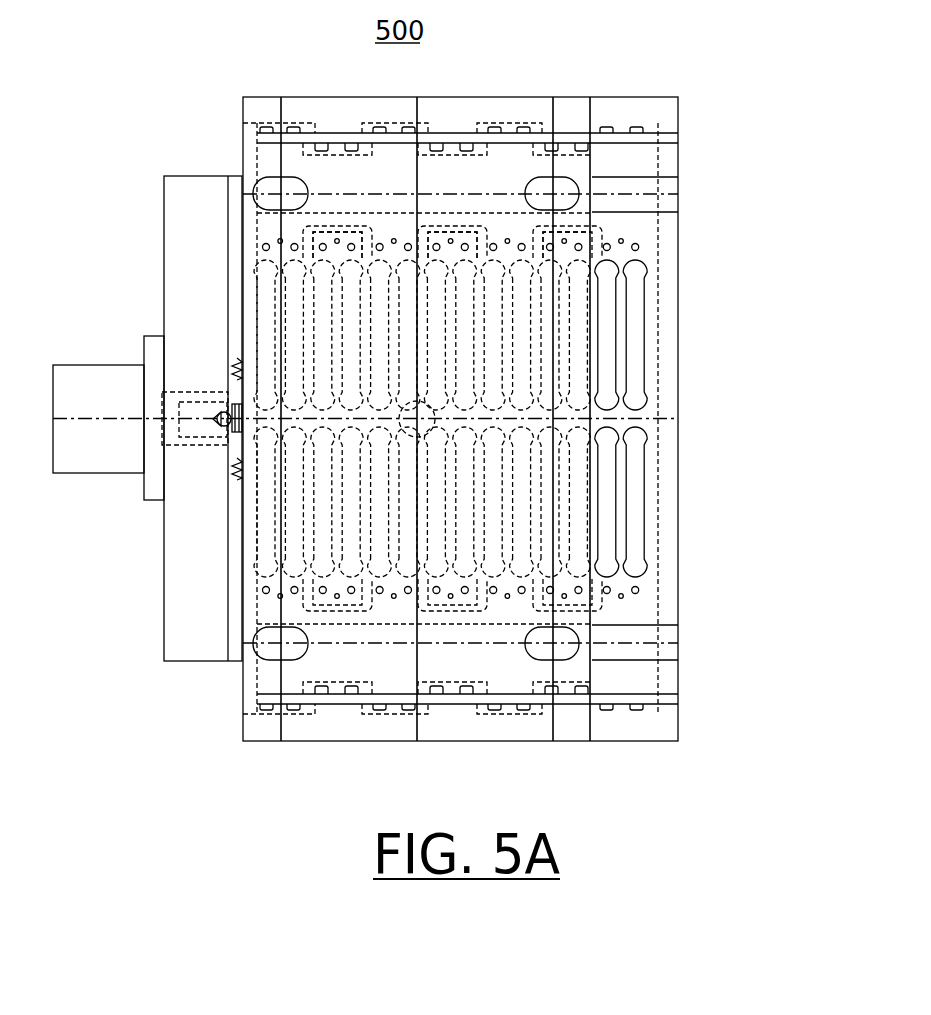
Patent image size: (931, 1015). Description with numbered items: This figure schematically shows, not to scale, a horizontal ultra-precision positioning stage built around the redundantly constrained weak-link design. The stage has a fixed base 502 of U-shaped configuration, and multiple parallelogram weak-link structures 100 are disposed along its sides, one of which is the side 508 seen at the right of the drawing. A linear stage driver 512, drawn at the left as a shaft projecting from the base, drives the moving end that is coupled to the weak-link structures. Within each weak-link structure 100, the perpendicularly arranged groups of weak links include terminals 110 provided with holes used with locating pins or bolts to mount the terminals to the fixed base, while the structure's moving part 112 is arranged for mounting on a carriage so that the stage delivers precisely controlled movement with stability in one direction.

The fixed base 502 is at (203, 618).
The side 508 is at (669, 160).
The linear stage driver 512 is at (74, 445).
The multiple parallelogram weak-link structure 100 is at (680, 336).
The terminal 110 is at (596, 229).
The moving part 112 is at (679, 436).